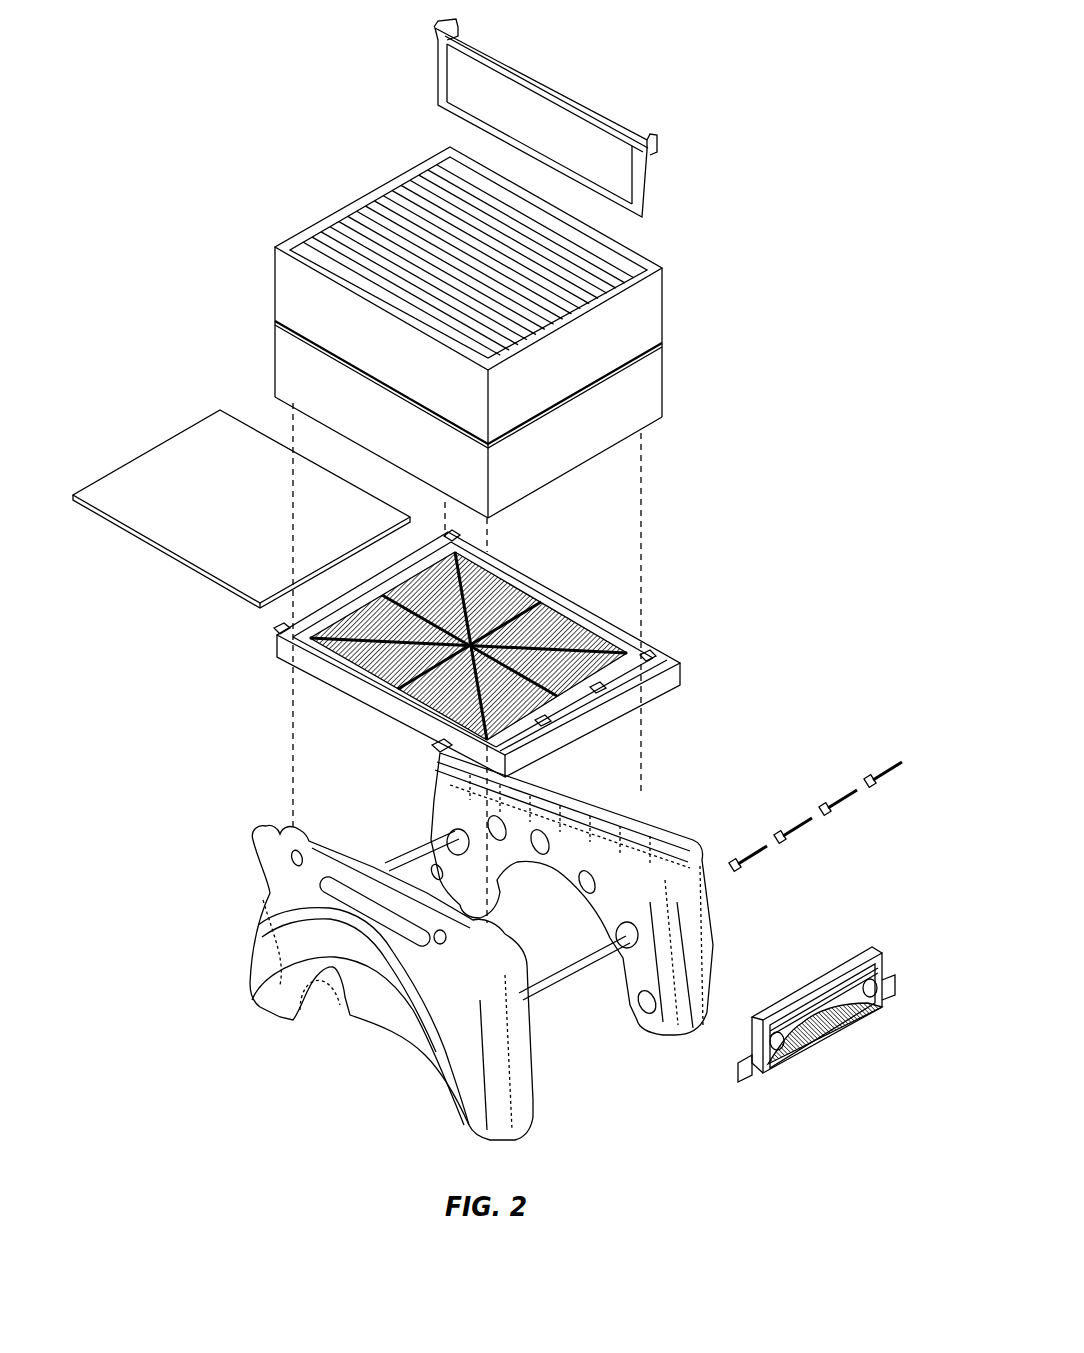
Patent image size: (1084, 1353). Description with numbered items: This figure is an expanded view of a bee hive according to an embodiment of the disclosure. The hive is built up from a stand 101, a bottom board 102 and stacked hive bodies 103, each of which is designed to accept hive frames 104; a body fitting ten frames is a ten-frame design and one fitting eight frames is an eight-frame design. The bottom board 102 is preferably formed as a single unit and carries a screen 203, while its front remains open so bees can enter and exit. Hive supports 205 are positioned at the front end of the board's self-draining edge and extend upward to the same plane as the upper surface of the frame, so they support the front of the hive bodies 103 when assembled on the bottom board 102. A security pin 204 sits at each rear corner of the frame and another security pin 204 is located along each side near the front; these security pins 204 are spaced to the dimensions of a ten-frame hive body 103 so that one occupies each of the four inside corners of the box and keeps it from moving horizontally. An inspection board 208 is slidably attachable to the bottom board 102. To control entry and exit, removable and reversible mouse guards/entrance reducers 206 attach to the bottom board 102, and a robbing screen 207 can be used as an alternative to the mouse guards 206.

The stand 101 is at (693, 942).
The bottom board 102 is at (660, 693).
The hive bodies 103 is at (633, 327).
The hive frames 104 is at (607, 117).
The screen 203 is at (570, 617).
The security pin 204 is at (457, 538).
The hive supports 205 is at (608, 690).
The mouse guards/entrance reducers 206 is at (906, 786).
The robbing screen 207 is at (882, 977).
The inspection board 208 is at (173, 460).